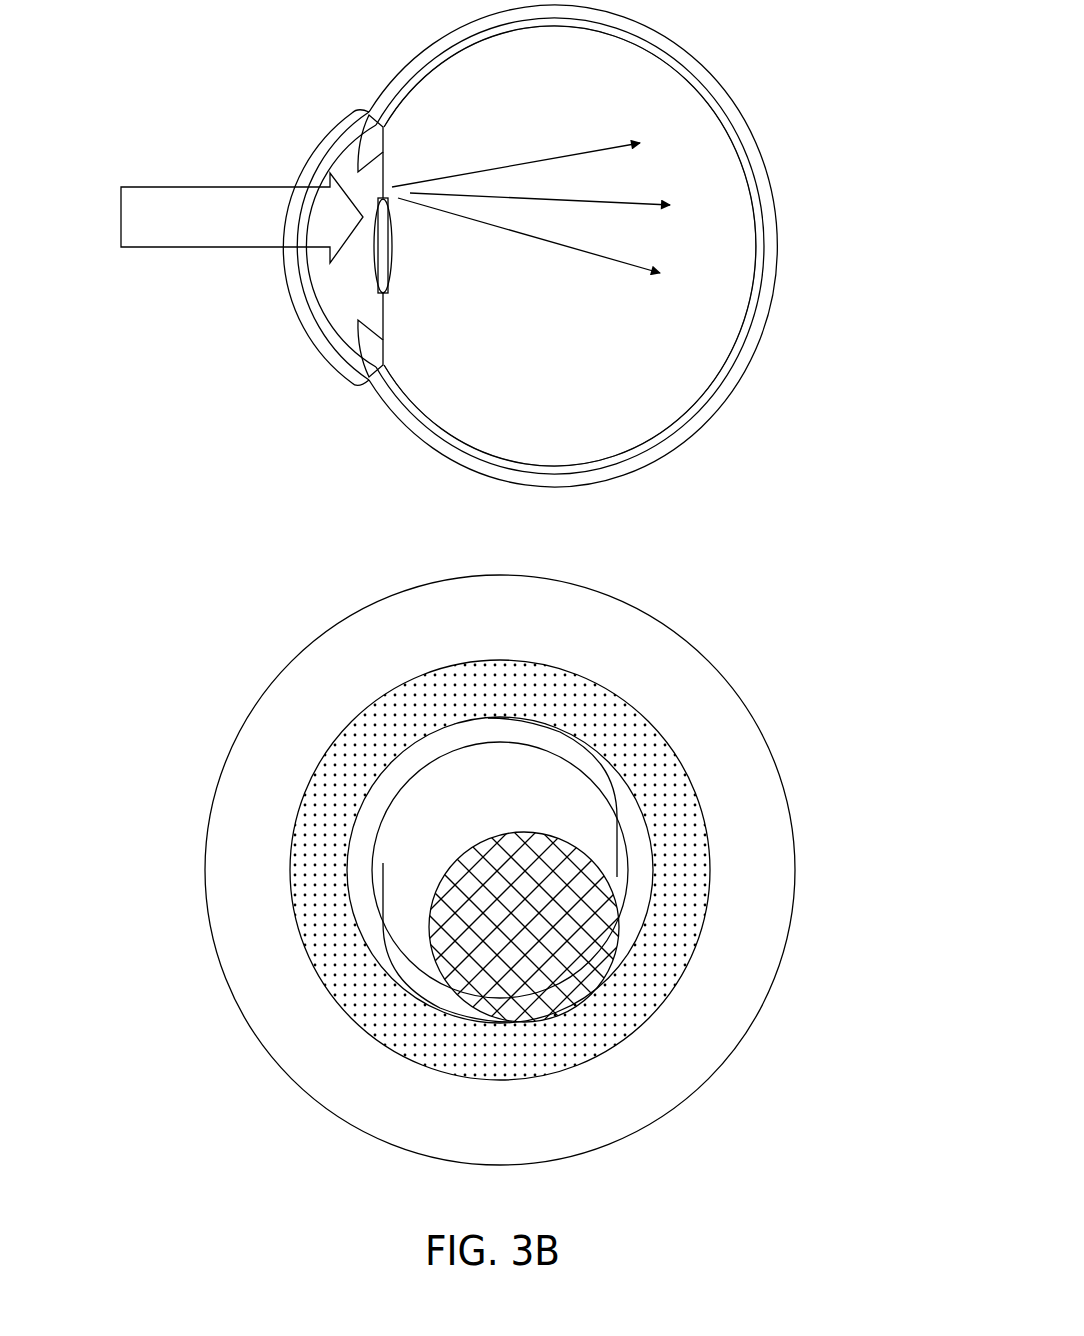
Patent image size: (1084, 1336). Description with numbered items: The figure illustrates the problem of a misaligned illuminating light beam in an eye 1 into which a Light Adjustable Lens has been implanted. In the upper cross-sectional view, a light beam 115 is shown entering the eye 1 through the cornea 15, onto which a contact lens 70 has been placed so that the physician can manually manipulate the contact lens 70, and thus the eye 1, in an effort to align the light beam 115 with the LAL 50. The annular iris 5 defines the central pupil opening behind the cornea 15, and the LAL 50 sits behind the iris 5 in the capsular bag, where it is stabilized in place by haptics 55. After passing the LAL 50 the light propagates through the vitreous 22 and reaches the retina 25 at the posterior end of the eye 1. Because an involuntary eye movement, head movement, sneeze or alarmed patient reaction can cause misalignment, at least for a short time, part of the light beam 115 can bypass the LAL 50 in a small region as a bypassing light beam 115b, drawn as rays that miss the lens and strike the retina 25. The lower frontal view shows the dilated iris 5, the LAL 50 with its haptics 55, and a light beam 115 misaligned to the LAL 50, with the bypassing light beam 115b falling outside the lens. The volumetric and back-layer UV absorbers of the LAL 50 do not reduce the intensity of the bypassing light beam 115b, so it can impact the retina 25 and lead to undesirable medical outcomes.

The eye 1 is at (407, 63).
The iris 5 is at (360, 160).
The cornea 15 is at (338, 353).
The vitreous 22 is at (545, 357).
The retina 25 is at (713, 131).
The LAL 50 is at (393, 256).
The haptics 55 is at (622, 805).
The contact lens 70 is at (305, 333).
The light beam 115 is at (478, 852).
The bypassing light beam 115b is at (643, 200).